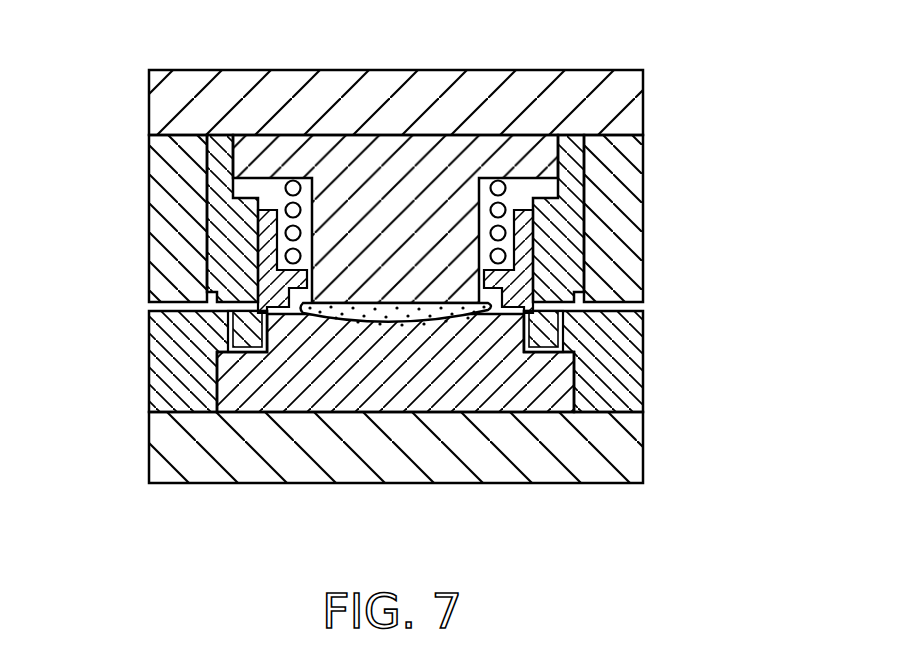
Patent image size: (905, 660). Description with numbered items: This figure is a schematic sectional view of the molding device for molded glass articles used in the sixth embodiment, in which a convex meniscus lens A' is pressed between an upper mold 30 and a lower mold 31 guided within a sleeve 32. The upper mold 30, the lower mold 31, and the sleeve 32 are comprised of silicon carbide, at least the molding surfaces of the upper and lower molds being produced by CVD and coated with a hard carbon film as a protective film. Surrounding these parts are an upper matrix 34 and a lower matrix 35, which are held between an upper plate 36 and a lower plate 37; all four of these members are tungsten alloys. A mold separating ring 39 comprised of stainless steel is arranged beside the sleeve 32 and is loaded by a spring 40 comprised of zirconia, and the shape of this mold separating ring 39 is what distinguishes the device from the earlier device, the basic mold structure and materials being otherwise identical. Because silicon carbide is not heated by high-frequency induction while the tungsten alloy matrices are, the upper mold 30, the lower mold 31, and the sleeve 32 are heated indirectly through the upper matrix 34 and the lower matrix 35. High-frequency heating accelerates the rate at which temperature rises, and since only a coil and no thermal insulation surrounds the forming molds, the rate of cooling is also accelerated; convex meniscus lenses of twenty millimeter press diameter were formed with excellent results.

The upper mold 30 is at (460, 170).
The lower mold 31 is at (484, 383).
The sleeve 32 is at (232, 262).
The upper matrix 34 is at (183, 167).
The lower matrix 35 is at (177, 368).
The upper plate 36 is at (334, 122).
The lower plate 37 is at (190, 452).
The mold separating ring 39 is at (272, 290).
The spring 40 is at (286, 211).
The substrate A' is at (396, 430).